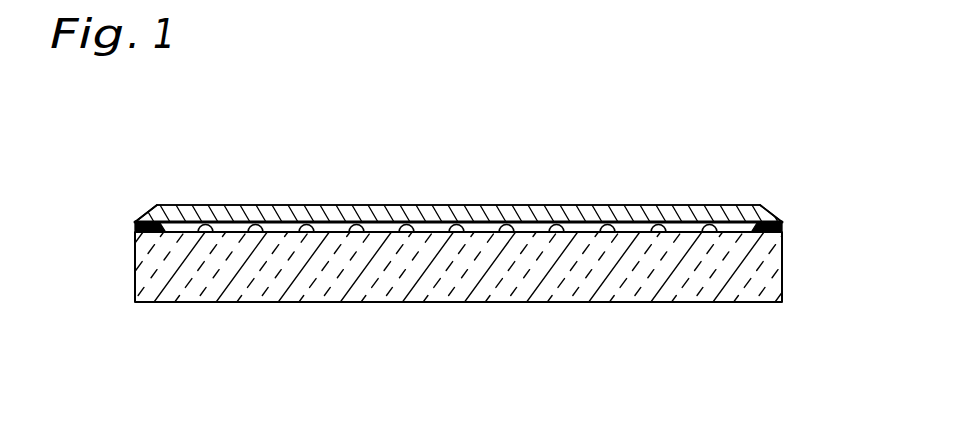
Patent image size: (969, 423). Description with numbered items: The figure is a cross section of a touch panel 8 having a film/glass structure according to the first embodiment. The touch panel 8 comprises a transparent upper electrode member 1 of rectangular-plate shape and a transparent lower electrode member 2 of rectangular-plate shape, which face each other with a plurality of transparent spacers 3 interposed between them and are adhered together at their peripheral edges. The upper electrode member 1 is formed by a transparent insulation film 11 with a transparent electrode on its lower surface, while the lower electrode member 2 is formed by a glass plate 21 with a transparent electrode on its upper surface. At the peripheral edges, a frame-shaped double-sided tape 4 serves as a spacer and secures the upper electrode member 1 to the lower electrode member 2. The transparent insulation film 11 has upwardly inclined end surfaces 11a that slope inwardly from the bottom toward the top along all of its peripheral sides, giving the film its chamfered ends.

The upper electrode member 1 is at (737, 187).
The lower electrode member 2 is at (762, 304).
The glass plate 21 is at (633, 287).
The transparent spacers 3 is at (407, 234).
The frame-shaped double-sided tape 4 is at (152, 229).
The touch panel 8 is at (378, 203).
The transparent insulation film 11 is at (613, 204).
The upwardly inclined end surfaces 11a is at (141, 207).